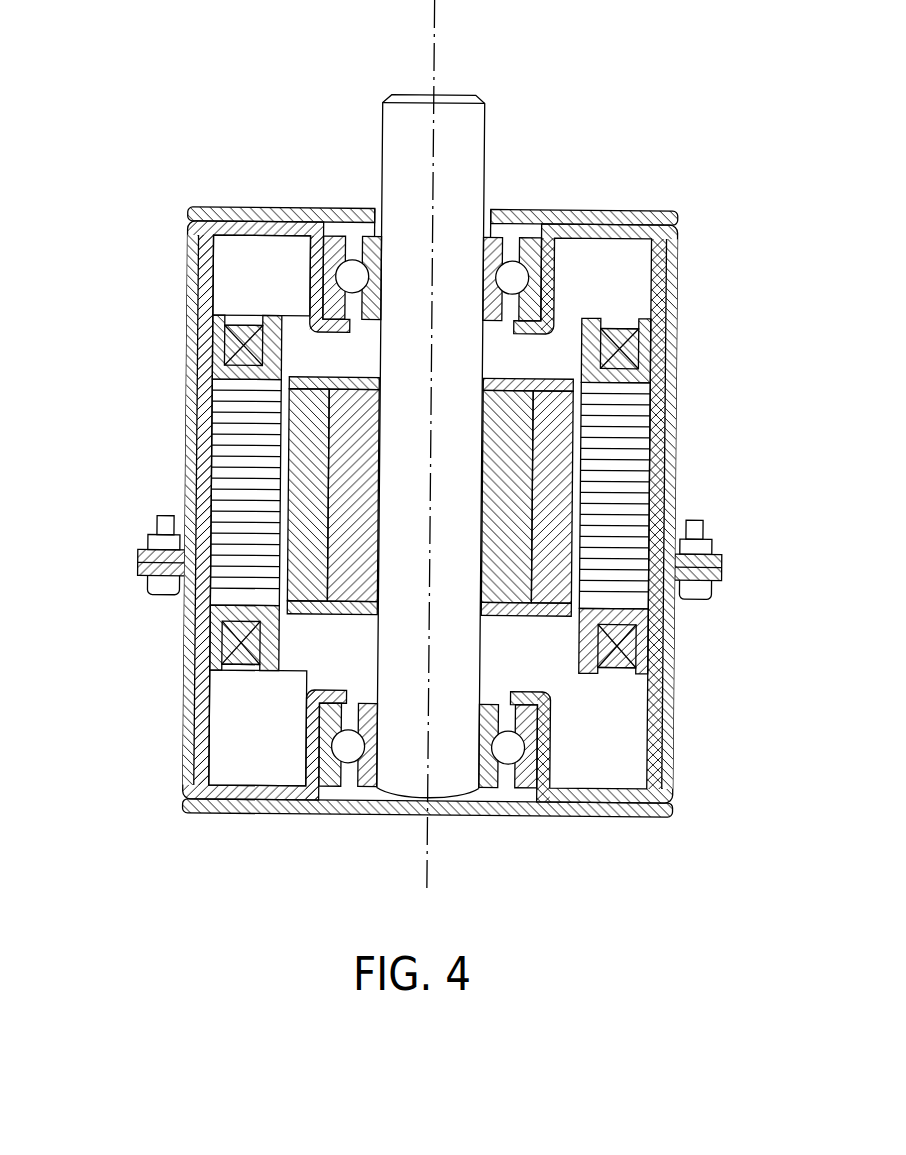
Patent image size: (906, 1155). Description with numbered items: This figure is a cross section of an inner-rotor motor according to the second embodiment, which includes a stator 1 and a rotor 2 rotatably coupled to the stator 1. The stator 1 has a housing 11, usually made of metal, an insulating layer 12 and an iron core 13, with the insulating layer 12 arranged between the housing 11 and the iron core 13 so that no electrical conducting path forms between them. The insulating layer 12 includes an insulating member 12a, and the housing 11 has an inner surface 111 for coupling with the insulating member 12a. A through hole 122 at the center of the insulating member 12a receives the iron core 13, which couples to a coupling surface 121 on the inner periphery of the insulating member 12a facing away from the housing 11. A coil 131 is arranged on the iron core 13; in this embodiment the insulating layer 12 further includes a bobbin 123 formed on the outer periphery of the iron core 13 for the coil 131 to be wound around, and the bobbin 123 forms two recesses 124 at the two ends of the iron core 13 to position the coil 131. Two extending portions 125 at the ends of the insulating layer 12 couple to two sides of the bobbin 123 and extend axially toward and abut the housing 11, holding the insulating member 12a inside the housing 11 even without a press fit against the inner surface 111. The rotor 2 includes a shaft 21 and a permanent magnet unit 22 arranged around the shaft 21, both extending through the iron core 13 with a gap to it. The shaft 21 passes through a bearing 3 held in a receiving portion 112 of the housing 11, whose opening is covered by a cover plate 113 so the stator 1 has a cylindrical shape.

The stator 1 is at (700, 231).
The rotor 2 is at (518, 43).
The bearing 3 is at (366, 240).
The housing 11 is at (200, 335).
The insulating layer 12 is at (213, 352).
The insulating member 12a is at (193, 510).
The iron core 13 is at (216, 412).
The shaft 21 is at (467, 163).
The permanent magnet unit 22 is at (554, 380).
The inner surface 111 is at (205, 278).
The receiving portion 112 is at (331, 232).
The cover plate 113 is at (632, 214).
The coupling surface 121 is at (217, 470).
The through hole 122 is at (296, 325).
The bobbin 123 is at (652, 357).
The recesses 124 is at (617, 323).
The extending portions 125 is at (208, 247).
The coil 131 is at (248, 333).